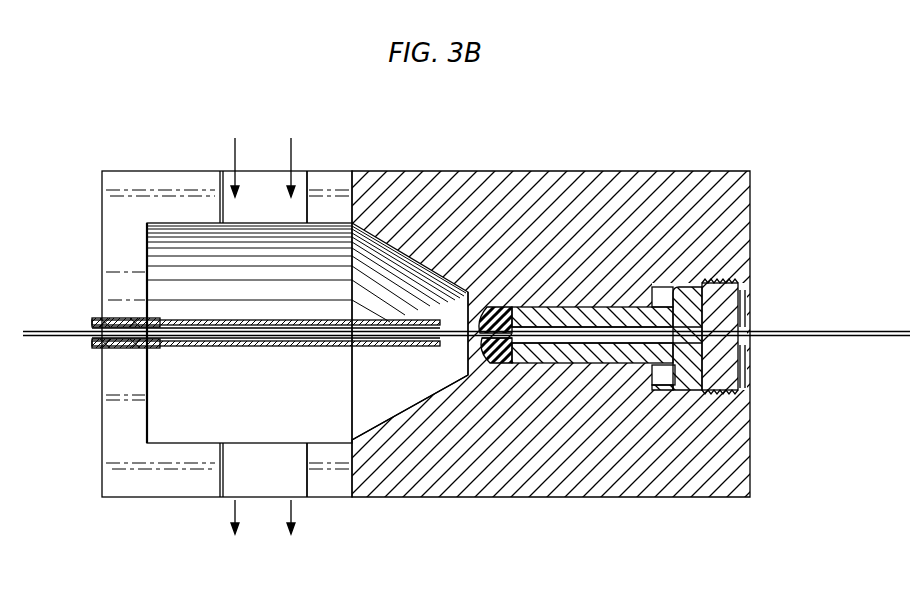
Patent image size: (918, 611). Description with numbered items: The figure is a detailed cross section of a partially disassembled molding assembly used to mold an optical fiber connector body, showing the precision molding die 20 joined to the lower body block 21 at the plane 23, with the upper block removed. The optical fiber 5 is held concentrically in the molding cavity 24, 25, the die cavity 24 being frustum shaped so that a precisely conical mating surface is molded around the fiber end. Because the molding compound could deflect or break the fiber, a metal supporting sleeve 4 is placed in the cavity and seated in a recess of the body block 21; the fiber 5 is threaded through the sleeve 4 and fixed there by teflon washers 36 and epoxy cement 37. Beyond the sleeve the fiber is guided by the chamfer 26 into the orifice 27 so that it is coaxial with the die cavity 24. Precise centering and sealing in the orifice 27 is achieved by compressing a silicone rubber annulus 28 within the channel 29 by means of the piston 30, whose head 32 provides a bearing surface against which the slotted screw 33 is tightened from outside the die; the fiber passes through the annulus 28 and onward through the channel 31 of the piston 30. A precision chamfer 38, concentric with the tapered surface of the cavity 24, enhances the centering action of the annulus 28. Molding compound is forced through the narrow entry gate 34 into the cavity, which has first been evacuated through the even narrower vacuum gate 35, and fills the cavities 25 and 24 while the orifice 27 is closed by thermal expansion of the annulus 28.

The supporting sleeve 4 is at (250, 347).
The optical fiber 5 is at (33, 337).
The precision molding die 20 is at (680, 172).
The lower body block 21 is at (135, 178).
The plane 23 is at (349, 186).
The die cavity 24 is at (410, 408).
The molding cavity 25 is at (173, 225).
The chamfer 26 is at (472, 325).
The orifice 27 is at (472, 343).
The annulus 28 is at (495, 366).
The channel 29 is at (568, 364).
The piston 30 is at (548, 306).
The channel 31 is at (600, 330).
The head 32 is at (685, 376).
The screw 33 is at (722, 392).
The entry gate 34 is at (258, 195).
The vacuum gate 35 is at (262, 485).
The teflon washers 36 is at (150, 348).
The epoxy cement 37 is at (118, 319).
The precision chamfer 38 is at (490, 305).